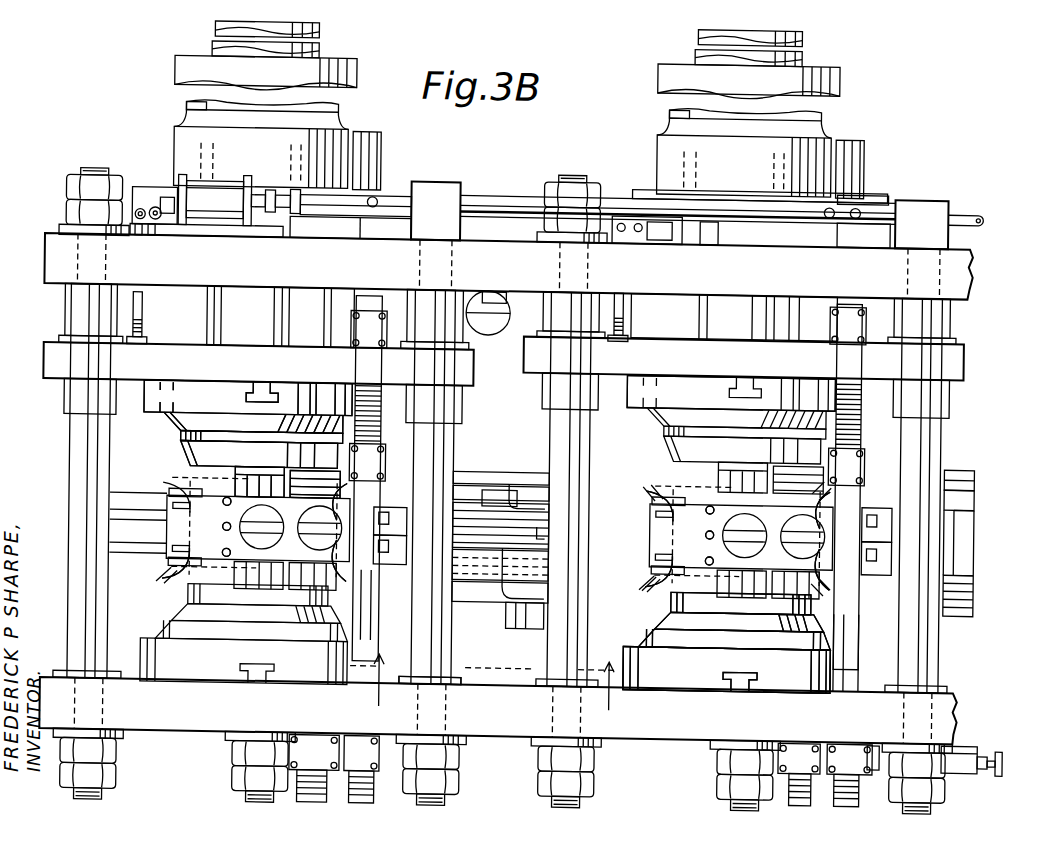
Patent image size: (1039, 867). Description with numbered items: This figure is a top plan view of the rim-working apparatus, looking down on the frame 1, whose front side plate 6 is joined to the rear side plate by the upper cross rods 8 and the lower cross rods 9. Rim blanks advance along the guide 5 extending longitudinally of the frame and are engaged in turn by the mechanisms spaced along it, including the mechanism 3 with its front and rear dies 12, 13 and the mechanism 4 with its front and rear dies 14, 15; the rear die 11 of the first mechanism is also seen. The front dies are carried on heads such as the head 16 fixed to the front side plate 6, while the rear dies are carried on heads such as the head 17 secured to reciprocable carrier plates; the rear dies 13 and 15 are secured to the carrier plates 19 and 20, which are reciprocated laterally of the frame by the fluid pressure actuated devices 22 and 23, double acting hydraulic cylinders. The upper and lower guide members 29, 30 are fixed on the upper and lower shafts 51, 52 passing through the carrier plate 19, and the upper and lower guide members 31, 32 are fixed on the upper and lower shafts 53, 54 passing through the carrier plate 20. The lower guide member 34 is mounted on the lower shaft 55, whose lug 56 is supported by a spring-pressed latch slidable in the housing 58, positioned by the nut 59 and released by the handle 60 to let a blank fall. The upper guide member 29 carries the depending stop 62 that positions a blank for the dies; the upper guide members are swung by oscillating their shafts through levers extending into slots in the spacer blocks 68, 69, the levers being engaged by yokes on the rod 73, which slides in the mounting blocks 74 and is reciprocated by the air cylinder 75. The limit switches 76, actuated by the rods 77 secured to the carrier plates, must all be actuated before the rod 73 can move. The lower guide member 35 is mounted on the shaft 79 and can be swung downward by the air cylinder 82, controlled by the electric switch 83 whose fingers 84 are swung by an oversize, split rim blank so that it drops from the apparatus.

The frame 1 is at (975, 268).
The mechanism 3 is at (839, 605).
The mechanism 4 is at (146, 445).
The guide 5 is at (445, 535).
The front side plate 6 is at (965, 712).
The upper cross rods 8 is at (70, 428).
The lower cross rods 9 is at (238, 792).
The rear die 11 is at (495, 690).
The front die 12 is at (660, 598).
The rear die 13 is at (675, 440).
The front die 14 is at (185, 614).
The rear die 15 is at (185, 455).
The head 16 is at (690, 680).
The head 17 is at (628, 384).
The carrier plate 19 is at (960, 345).
The carrier plate 20 is at (50, 356).
The fluid pressure actuated device 22 is at (660, 140).
The fluid pressure actuated device 23 is at (185, 135).
The upper guide member 29 is at (708, 528).
The lower guide member 30 is at (650, 580).
The upper guide member 31 is at (222, 524).
The lower guide member 32 is at (160, 556).
The lower guide member 34 is at (973, 490).
The lower guide member 35 is at (490, 458).
The upper shaft 51 is at (878, 593).
The lower shaft 52 is at (818, 490).
The upper shaft 53 is at (345, 622).
The lower shaft 54 is at (308, 556).
The lower shaft 55 is at (865, 648).
The lug 56 is at (870, 735).
The housing 58 is at (948, 773).
The nut 59 is at (988, 766).
The handle 60 is at (1008, 744).
The depending stop 62 is at (672, 480).
The spacer block 68 is at (870, 185).
The spacer block 69 is at (390, 185).
The rod 73 is at (975, 202).
The mounting blocks 74 is at (450, 185).
The fluid pressure operated device 75 is at (222, 182).
The limit switches 76 is at (168, 200).
The rods 77 is at (143, 315).
The shaft 79 is at (405, 615).
The fluid pressure operated device 82 is at (498, 315).
The electric switch 83 is at (572, 618).
The fingers 84 is at (505, 575).